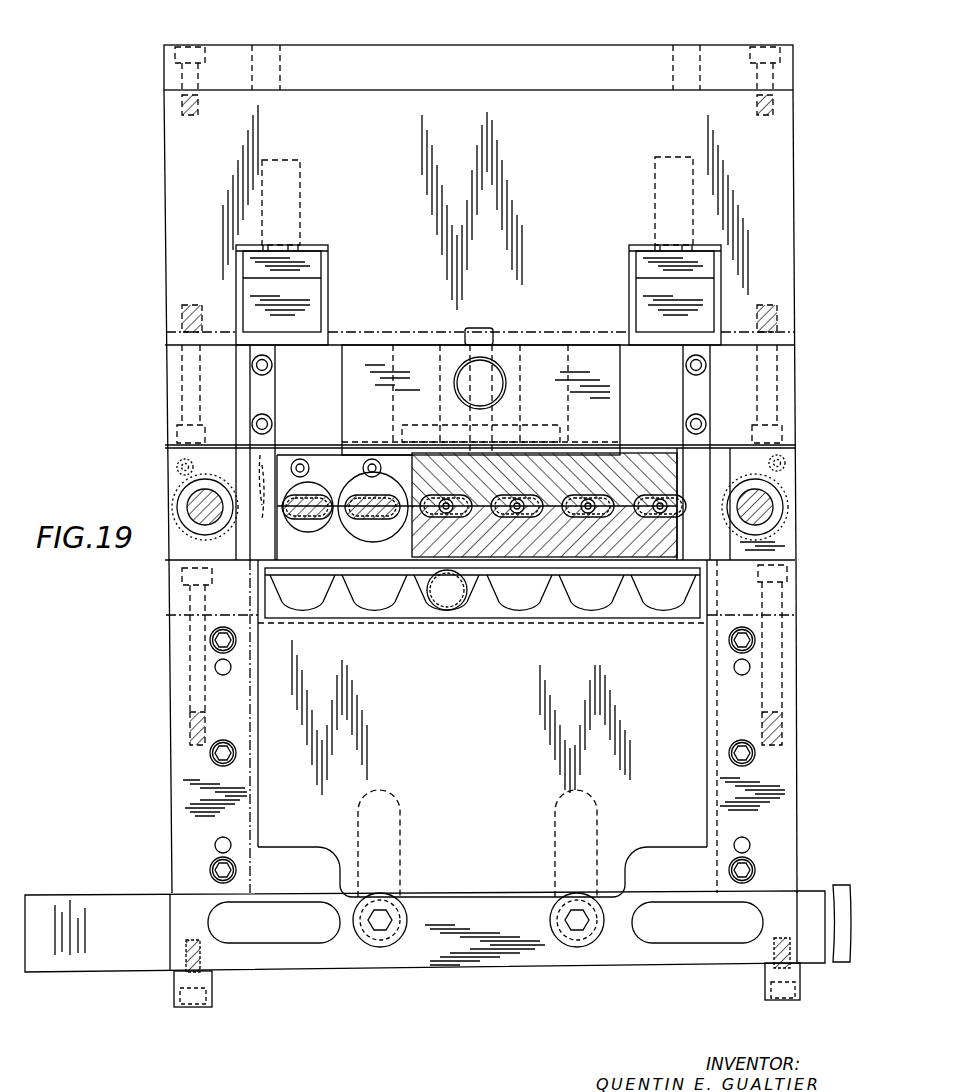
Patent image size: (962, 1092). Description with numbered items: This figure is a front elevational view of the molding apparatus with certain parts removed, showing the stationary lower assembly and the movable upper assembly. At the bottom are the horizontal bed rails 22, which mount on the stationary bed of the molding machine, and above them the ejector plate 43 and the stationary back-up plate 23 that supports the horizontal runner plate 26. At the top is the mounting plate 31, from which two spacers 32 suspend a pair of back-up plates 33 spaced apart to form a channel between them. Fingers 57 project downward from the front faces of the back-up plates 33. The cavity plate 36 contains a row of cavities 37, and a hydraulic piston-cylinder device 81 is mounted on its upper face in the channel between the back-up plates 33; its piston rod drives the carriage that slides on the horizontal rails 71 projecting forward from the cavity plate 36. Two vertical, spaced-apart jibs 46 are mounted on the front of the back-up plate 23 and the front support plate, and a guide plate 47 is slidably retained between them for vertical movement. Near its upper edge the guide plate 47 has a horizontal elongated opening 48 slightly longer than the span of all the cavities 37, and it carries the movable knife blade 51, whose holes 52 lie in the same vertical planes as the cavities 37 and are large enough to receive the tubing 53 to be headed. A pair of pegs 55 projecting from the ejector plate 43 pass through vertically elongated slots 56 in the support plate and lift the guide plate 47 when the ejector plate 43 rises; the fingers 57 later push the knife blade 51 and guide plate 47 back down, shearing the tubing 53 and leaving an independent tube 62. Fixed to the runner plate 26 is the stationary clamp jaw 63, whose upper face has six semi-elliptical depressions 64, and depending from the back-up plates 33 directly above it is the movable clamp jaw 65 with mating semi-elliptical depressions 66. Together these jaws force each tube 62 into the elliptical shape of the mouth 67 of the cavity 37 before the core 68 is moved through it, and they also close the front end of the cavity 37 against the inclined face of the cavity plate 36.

The mounting plate 31 is at (585, 55).
The spacers 32 is at (772, 190).
The back-up plates 33 is at (168, 394).
The fingers 57 is at (256, 394).
The hydraulic piston-cylinder device 81 is at (496, 368).
The horizontal rails 71 is at (188, 506).
The cavity plate 36 is at (786, 542).
The cavities 37 is at (308, 480).
The mouth 67 is at (315, 522).
The core 68 is at (384, 525).
The movable clamp jaw 65 is at (482, 479).
The stationary clamp jaw 63 is at (552, 548).
The semi-elliptical depressions 64 is at (466, 498).
The semi-elliptical depressions 66 is at (452, 520).
The tube 62 is at (452, 514).
The runner plate 26 is at (790, 596).
The back-up plate 23 is at (790, 656).
The jibs 46 is at (170, 744).
The horizontal elongated opening 48 is at (414, 608).
The holes 52 is at (312, 606).
The movable knife blade 51 is at (548, 608).
The tubing 53 is at (450, 612).
The guide plate 47 is at (504, 760).
The vertically elongated slots 56 is at (398, 820).
The pegs 55 is at (552, 920).
The ejector plate 43 is at (298, 962).
The bed rails 22 is at (212, 992).